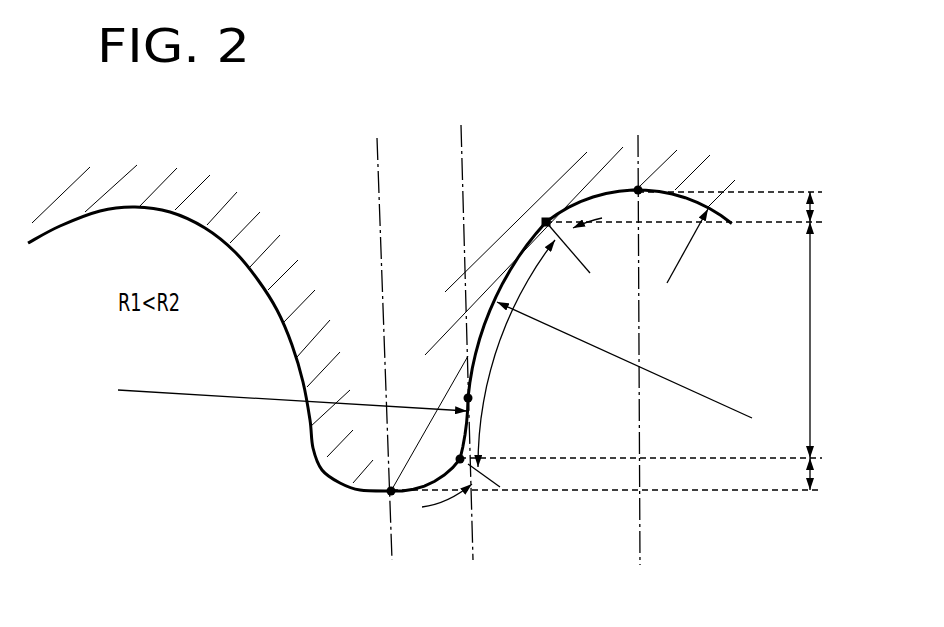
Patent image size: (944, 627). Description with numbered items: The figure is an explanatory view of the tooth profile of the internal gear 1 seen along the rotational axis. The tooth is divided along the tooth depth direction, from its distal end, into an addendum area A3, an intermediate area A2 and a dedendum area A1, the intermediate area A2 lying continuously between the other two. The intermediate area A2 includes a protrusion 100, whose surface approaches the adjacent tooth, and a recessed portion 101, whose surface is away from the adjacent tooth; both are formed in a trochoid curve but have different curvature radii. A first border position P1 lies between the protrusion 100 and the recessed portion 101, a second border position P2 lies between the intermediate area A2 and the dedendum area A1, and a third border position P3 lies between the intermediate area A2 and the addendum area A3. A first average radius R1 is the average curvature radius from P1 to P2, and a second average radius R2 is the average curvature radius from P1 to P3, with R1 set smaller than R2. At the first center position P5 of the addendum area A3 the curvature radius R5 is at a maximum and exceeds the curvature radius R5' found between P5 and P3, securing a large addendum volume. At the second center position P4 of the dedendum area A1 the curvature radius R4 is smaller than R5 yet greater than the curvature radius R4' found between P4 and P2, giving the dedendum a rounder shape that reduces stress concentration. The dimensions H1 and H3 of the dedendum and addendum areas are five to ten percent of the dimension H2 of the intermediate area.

The internal gear 1 is at (135, 182).
The protrusion 100 is at (468, 433).
The recessed portion 101 is at (516, 275).
The first border position P1 is at (472, 397).
The second border position P2 is at (543, 219).
The third border position P3 is at (463, 457).
The second center position P4 is at (638, 189).
The first center position P5 is at (390, 493).
The dedendum area A1 is at (573, 226).
The intermediate area A2 is at (503, 330).
The addendum area A3 is at (443, 507).
The first average radius R1 is at (624, 360).
The second average radius R2 is at (292, 392).
The curvature radius (third curvature radius) R4 is at (613, 254).
The curvature radius R4' is at (708, 250).
The curvature radius (first curvature radius) R5 is at (324, 459).
The curvature radius (second curvature radius) R5' is at (429, 440).
The dimension H1 is at (829, 208).
The dimension H2 is at (826, 340).
The dimension H3 is at (825, 475).